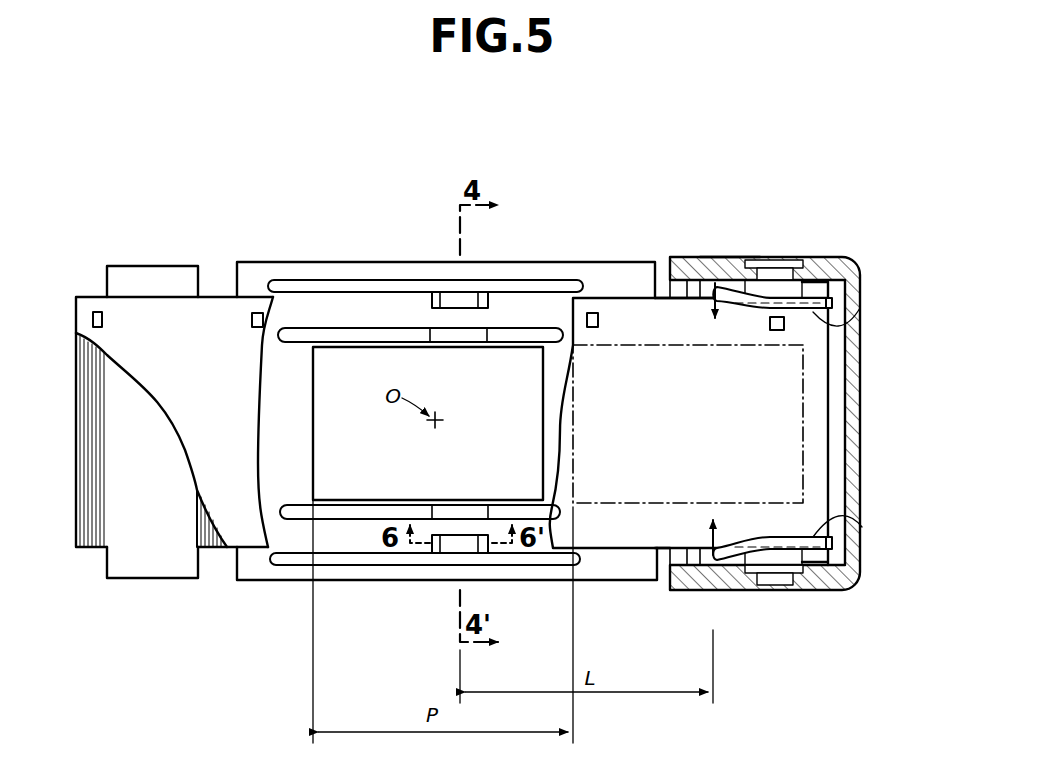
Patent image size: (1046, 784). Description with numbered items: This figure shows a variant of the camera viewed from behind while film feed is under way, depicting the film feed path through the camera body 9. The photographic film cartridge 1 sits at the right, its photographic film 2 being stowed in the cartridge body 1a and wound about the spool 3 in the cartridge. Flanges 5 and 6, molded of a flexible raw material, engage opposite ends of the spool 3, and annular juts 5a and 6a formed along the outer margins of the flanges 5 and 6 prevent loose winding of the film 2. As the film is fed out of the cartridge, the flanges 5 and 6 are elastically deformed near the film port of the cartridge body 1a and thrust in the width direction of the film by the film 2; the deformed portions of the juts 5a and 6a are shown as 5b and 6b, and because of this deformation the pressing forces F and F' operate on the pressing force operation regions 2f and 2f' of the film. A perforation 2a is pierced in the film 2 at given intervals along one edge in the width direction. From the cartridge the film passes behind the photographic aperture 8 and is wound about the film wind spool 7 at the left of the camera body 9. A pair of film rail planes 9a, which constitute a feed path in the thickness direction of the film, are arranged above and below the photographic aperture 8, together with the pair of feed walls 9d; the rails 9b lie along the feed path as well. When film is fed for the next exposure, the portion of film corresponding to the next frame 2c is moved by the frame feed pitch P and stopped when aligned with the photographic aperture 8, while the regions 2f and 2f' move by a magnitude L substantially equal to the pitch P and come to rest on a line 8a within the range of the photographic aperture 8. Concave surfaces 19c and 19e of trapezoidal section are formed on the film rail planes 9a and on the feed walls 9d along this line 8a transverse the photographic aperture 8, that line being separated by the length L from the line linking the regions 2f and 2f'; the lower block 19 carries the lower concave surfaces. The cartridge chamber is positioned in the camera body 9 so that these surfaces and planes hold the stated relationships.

The photographic film cartridge 1 is at (795, 252).
The cartridge body 1a is at (733, 258).
The photographic film 2 is at (594, 298).
The perforation 2a is at (257, 313).
The next frame 2c is at (603, 505).
The pressing force operation region 2f is at (690, 263).
The pressing force operation region 2f' is at (700, 585).
The spool 3 is at (767, 270).
The flange 5 is at (820, 295).
The annular jut 5a is at (860, 308).
The deformed portion of jut 5b is at (692, 318).
The flange 6 is at (813, 552).
The annular jut 6a is at (862, 527).
The deformed portion of jut 6b is at (717, 553).
The film wind spool 7 is at (157, 266).
The photographic aperture 8 is at (316, 428).
The line 8a is at (460, 669).
The camera body 9 is at (537, 262).
The film rail planes 9a is at (372, 335).
The frame rail 9b is at (316, 280).
The feed walls 9d is at (375, 315).
The lower block 19 is at (438, 555).
The concave surface 19c is at (495, 419).
The concave surface 19e is at (447, 296).